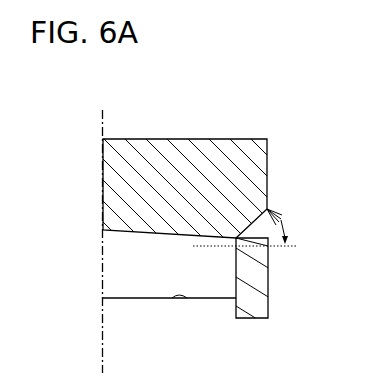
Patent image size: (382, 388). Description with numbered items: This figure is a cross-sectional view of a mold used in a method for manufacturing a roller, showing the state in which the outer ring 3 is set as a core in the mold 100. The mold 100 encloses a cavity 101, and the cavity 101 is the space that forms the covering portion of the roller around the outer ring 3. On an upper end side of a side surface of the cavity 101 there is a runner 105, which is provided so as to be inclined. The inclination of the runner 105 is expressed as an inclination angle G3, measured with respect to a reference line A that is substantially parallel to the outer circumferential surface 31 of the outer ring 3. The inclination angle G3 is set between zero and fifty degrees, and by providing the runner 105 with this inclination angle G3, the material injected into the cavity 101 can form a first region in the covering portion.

The mold 100 is at (152, 139).
The cavity 101 is at (108, 255).
The runner 105 is at (269, 250).
The outer ring 3 is at (146, 308).
The outer circumferential surface 31 is at (180, 298).
The inclination angle G3 is at (287, 229).
The reference line A is at (252, 246).